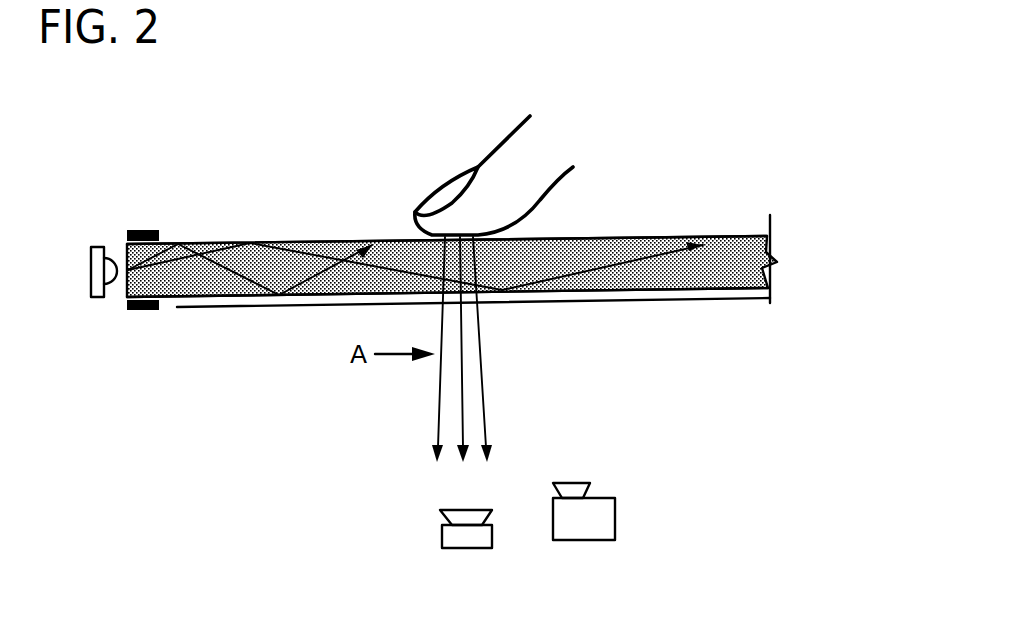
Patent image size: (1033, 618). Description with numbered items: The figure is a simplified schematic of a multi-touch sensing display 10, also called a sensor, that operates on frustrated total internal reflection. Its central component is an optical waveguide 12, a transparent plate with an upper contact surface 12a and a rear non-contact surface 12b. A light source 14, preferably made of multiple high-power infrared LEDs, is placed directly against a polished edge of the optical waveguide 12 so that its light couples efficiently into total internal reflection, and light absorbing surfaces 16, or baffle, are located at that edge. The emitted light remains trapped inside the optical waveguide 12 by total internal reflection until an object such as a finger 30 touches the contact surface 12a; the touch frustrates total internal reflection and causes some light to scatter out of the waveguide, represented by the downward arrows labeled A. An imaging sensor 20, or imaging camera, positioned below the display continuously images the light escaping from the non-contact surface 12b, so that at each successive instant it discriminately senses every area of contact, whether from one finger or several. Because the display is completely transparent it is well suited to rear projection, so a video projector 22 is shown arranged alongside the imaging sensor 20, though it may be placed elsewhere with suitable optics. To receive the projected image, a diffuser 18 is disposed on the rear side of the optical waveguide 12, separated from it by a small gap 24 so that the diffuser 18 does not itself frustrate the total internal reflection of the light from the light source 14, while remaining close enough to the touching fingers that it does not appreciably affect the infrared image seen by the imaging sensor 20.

The multi-touch sensing display 10 is at (772, 86).
The optical waveguide 12 is at (733, 260).
The contact surface 12a is at (660, 234).
The non-contact surface 12b is at (650, 287).
The light source 14 is at (98, 283).
The light absorbing surfaces 16 is at (133, 230).
The diffuser 18 is at (555, 302).
The imaging sensor 20 is at (453, 535).
The video projector 22 is at (603, 512).
The gap 24 is at (740, 292).
The finger 30 is at (510, 160).